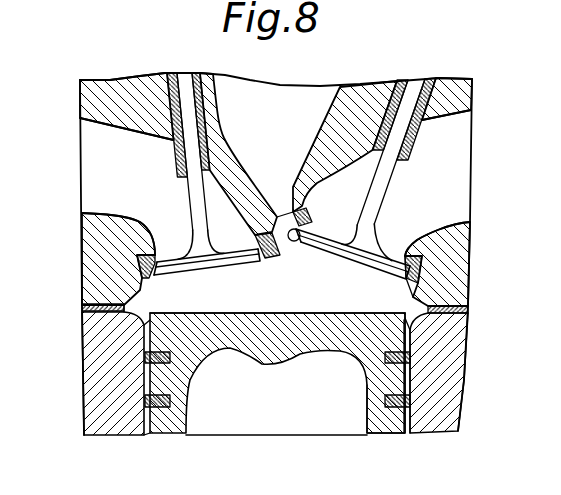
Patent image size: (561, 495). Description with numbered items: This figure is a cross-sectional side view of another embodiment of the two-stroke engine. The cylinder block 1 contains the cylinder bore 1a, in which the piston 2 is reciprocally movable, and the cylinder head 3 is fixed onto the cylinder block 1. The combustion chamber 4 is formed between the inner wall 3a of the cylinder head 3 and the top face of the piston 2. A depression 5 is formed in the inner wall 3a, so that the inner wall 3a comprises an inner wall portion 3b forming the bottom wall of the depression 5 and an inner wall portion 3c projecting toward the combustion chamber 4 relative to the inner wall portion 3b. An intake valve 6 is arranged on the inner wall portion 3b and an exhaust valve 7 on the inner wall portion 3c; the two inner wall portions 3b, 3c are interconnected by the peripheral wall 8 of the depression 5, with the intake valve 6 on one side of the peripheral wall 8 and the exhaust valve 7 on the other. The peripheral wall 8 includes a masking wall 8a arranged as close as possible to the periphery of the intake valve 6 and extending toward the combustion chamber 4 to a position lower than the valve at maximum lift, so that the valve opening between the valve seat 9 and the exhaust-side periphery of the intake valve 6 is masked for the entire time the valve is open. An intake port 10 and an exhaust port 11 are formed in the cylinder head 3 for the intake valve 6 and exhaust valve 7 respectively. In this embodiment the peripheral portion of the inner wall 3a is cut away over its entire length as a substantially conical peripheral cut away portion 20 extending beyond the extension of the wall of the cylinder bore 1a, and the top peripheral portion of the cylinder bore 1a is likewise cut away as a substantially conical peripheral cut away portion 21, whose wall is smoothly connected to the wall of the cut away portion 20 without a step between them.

The cylinder block 1 is at (420, 418).
The cylinder bore 1a is at (418, 385).
The piston 2 is at (392, 424).
The cylinder head 3 is at (448, 256).
The inner wall of the cylinder head 3a is at (277, 260).
The inner wall portion 3b is at (410, 283).
The inner wall portion 3c is at (146, 287).
The combustion chamber 4 is at (242, 348).
The depression 5 is at (318, 252).
The intake valve 6 is at (378, 188).
The exhaust valve 7 is at (190, 200).
The peripheral wall of the depression 8 is at (294, 241).
The masking wall 8a is at (287, 224).
The valve seat 9 is at (420, 268).
The intake port 10 is at (444, 148).
The exhaust port 11 is at (98, 167).
The peripheral cut away portion 20 is at (80, 272).
The peripheral cut away portion 21 is at (108, 338).